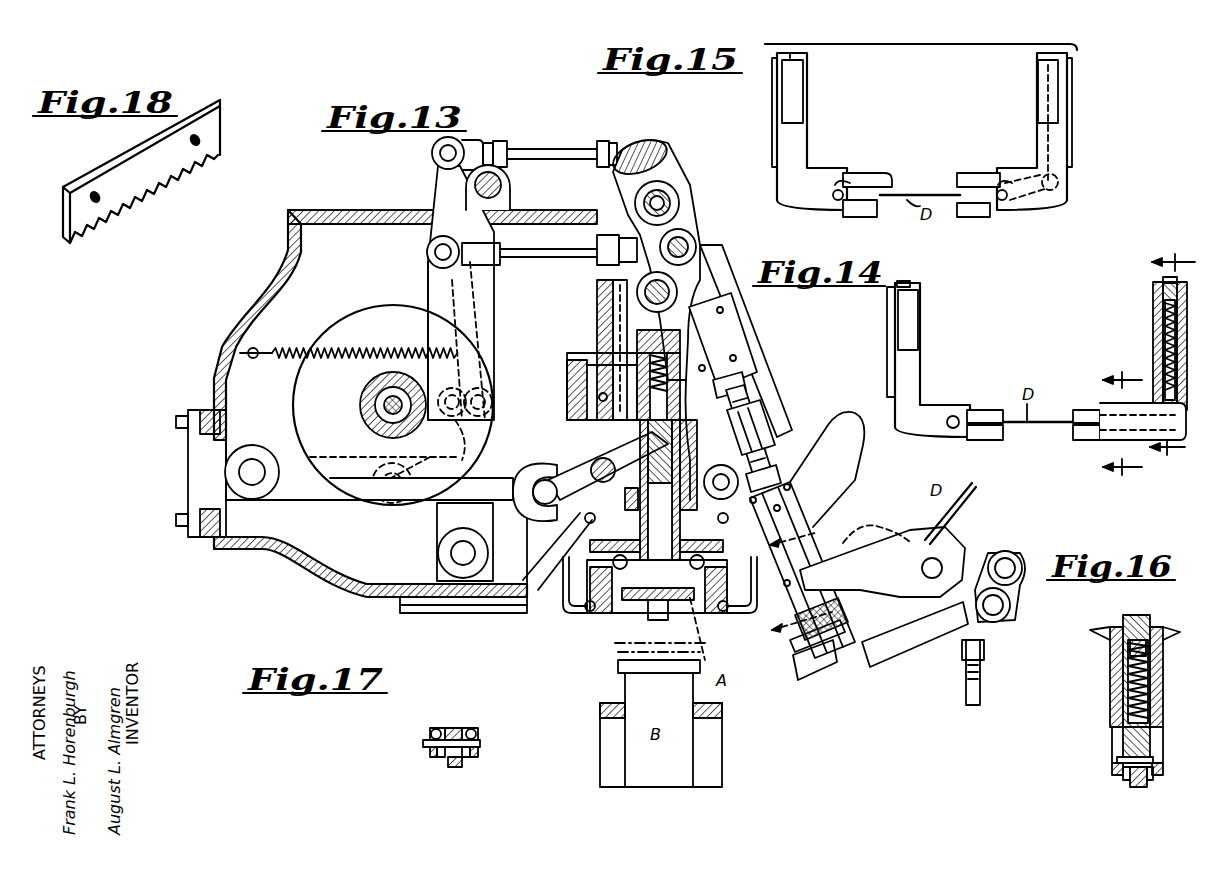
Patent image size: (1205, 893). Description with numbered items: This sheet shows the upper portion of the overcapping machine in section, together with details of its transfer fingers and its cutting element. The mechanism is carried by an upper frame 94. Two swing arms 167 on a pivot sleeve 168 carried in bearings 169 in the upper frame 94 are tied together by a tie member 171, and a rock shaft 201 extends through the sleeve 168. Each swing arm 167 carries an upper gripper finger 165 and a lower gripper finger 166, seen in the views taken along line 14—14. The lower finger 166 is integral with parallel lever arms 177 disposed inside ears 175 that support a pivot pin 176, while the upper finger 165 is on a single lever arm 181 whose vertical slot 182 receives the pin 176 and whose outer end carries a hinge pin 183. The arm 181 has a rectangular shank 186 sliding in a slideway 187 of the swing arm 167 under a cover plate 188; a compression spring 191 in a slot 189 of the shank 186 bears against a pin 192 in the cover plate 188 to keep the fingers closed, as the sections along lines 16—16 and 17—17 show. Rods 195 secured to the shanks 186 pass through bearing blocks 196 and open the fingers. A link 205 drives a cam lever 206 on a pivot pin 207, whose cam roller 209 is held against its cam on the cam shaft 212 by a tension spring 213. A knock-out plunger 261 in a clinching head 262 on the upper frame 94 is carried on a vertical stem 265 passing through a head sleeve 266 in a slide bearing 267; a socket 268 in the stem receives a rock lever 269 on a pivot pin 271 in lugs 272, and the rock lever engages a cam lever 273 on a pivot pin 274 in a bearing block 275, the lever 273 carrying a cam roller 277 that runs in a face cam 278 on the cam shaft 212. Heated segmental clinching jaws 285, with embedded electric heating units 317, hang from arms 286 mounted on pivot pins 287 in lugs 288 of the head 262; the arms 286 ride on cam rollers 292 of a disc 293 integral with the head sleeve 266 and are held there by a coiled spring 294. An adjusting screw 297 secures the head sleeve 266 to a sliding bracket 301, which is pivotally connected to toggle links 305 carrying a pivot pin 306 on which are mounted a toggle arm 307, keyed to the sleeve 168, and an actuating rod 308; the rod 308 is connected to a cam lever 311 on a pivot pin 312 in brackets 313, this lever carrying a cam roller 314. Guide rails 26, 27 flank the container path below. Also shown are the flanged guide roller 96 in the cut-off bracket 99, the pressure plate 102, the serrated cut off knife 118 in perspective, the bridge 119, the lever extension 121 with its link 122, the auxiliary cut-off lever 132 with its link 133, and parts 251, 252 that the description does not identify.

In FIG. 13, the housing 94 is at (291, 250).
In FIG. 13, the bearing boss 275 is at (205, 459).
In FIG. 13, the shaft bearing 274 is at (252, 470).
In FIG. 13, the cam track 278 is at (325, 470).
In FIG. 13, the roller 277 is at (350, 496).
In FIG. 13, the lever arm 273 is at (499, 494).
In FIG. 13, the bearing block 313 is at (440, 573).
In FIG. 13, the shaft bearing 312 is at (456, 551).
In FIG. 13, the brace 294 is at (556, 543).
In FIG. 13, the link 206 is at (440, 184).
In FIG. 13, the arm 311 is at (434, 284).
In FIG. 13, the pivot pin 207 is at (474, 282).
In FIG. 13, the gear 212 is at (386, 403).
In FIG. 13, the spring 213 is at (288, 347).
In FIG. 13, the roller 209 is at (497, 407).
In FIG. 13, the slot 314 is at (445, 445).
In FIG. 13, the connecting rod 205 is at (544, 150).
In FIG. 13, the boss 251 is at (503, 181).
In FIG. 13, the shaft 252 is at (503, 191).
In FIG. 13, the bracket 169 is at (597, 222).
In FIG. 13, the connecting rod 308 is at (567, 253).
In FIG. 13, the lever 171 is at (648, 151).
In FIG. 13, the pivot bearing 168 is at (677, 193).
In FIG. 13, the pivot pin 201 is at (660, 198).
In FIG. 13, the lever arm 307 is at (684, 215).
In FIG. 13, the pin 306 is at (693, 240).
In FIG. 13, the pin 305 is at (680, 275).
In FIG. 13, the column 301 is at (640, 320).
In FIG. 13, the spring 297 is at (677, 351).
In FIG. 13, the screw 288 is at (598, 397).
In FIG. 13, the plate 287 is at (567, 373).
In FIG. 13, the block 265 is at (590, 421).
In FIG. 13, the slide 269 is at (590, 437).
In FIG. 13, the fork 272 is at (557, 458).
In FIG. 13, the rocker arm 271 is at (580, 468).
In FIG. 13, the valve body 261 is at (633, 600).
In FIG. 13, the base plate 292 is at (590, 528).
In FIG. 13, the base plate 293 is at (715, 540).
In FIG. 13, the pin 286 is at (591, 517).
In FIG. 13, the ball 285 is at (613, 600).
In FIG. 13, the pin 317 is at (582, 613).
In FIG. 13, the bracket 262 is at (578, 556).
In FIG. 13, the container part 27 is at (608, 753).
In FIG. 13, the container part 26 is at (710, 749).
In FIG. 13, the plate 196 is at (718, 325).
In FIG. 13, the bracket 167 is at (748, 343).
In FIG. 15, the bracket 167 is at (790, 130).
In FIG. 14, the bracket 167 is at (910, 358).
In FIG. 16, the bracket 167 is at (1117, 742).
In FIG. 13, the collar 267 is at (748, 372).
In FIG. 13, the rod 266 is at (768, 384).
In FIG. 13, the thread 268 is at (770, 407).
In FIG. 13, the nut 195 is at (776, 445).
In FIG. 13, the sleeve 192 is at (860, 450).
In FIG. 14, the sleeve 192 is at (1157, 312).
In FIG. 16, the sleeve 192 is at (1127, 652).
In FIG. 13, the rail 188 is at (810, 557).
In FIG. 15, the rail 188 is at (774, 93).
In FIG. 14, the rail 188 is at (890, 318).
In FIG. 13, the bolt 186 is at (780, 476).
In FIG. 15, the bolt 186 is at (786, 55).
In FIG. 14, the bolt 186 is at (905, 284).
In FIG. 16, the bolt 186 is at (1140, 628).
In FIG. 13, the washer 175 is at (757, 610).
In FIG. 16, the washer 175 is at (1113, 767).
In FIG. 17, the washer 175 is at (432, 732).
In FIG. 13, the nut 181 is at (810, 640).
In FIG. 16, the nut 181 is at (1135, 785).
In FIG. 17, the nut 181 is at (453, 768).
In FIG. 13, the pin 132 is at (827, 660).
In FIG. 13, the bar 99 is at (943, 618).
In FIG. 13, the lever 102 is at (860, 565).
In FIG. 13, the cam 96 is at (873, 532).
In FIG. 13, the handle 119 is at (953, 523).
In FIG. 13, the pivot 121 is at (973, 560).
In FIG. 13, the bracket 122 is at (1013, 583).
In FIG. 13, the bolt 133 is at (980, 697).
In FIG. 13, the section line 14- 14 is at (844, 566).
In FIG. 15, the upper jaw 165 is at (870, 177).
In FIG. 14, the upper jaw 165 is at (983, 412).
In FIG. 15, the lower jaw 166 is at (877, 217).
In FIG. 14, the lower jaw 166 is at (983, 430).
In FIG. 15, the pivot pin 176 is at (835, 199).
In FIG. 14, the pivot pin 176 is at (953, 418).
In FIG. 17, the pivot pin 176 is at (480, 743).
In FIG. 15, the spring 182 is at (840, 178).
In FIG. 17, the spring 182 is at (440, 760).
In FIG. 15, the stop 183 is at (1063, 185).
In FIG. 14, the stop 183 is at (1117, 410).
In FIG. 16, the stop 183 is at (1153, 762).
In FIG. 14, the spring 191 is at (1167, 340).
In FIG. 16, the spring 191 is at (1148, 695).
In FIG. 14, the section line 16- 16 is at (1172, 365).
In FIG. 14, the section line 17- 17 is at (1099, 425).
In FIG. 16, the wedge 187 is at (1158, 628).
In FIG. 16, the plug 189 is at (1150, 673).
In FIG. 16, the washer 177 is at (1127, 777).
In FIG. 17, the washer 177 is at (465, 728).
In FIG. 18, the serrated blade 118 is at (138, 204).